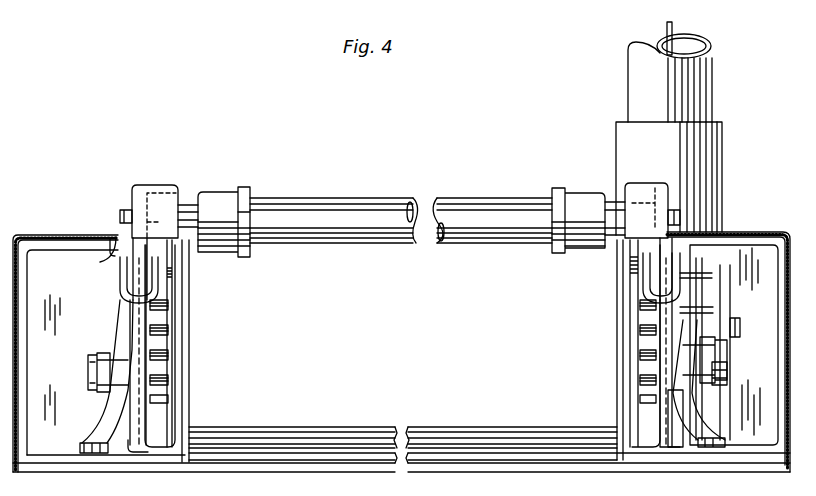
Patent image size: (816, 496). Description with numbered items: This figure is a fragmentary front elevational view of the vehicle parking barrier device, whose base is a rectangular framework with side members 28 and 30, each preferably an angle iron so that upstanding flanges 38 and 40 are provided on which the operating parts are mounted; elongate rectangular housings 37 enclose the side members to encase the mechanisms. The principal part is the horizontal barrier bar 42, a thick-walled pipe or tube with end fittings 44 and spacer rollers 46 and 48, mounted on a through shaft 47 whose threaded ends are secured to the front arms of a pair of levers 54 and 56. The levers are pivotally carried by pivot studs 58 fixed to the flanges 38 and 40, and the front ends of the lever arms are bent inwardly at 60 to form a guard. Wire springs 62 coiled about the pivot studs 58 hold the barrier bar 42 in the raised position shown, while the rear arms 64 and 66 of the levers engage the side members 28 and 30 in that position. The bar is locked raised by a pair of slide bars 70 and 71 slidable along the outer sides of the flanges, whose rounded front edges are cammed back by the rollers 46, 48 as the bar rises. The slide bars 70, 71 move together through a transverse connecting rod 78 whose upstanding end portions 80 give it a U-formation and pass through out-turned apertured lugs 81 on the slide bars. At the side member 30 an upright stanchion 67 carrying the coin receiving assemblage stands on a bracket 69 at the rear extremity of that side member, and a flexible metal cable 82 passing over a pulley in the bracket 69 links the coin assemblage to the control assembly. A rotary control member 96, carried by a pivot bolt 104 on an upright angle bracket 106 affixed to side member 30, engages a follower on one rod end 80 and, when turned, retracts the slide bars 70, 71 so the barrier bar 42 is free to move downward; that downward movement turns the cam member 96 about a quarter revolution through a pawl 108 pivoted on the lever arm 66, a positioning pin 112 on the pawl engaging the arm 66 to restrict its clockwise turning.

The side member 28 is at (62, 458).
The side member 30 is at (755, 456).
The housing 37 is at (62, 237).
The upstanding flange 38 is at (182, 362).
The upstanding flange 40 is at (617, 352).
The horizontal barrier bar 42 is at (331, 198).
The end fitting 44 is at (227, 198).
The spacer roller 46 is at (187, 208).
The through shaft 47 is at (127, 212).
The spacer roller 48 is at (615, 205).
The lever 54 is at (143, 348).
The lever 56 is at (660, 337).
The pivot stud 58 is at (88, 363).
The inwardly bent front end 60 is at (165, 200).
The wire spring 62 is at (128, 314).
The rear arm 64 is at (143, 447).
The rear arm 66 is at (660, 447).
The upright stanchion 67 is at (703, 86).
The bracket 69 is at (716, 160).
The slide bar 70 is at (170, 403).
The slide bar 71 is at (636, 391).
The connecting rod 78 is at (353, 432).
The upstanding end portion 80 is at (101, 258).
The apertured lug 81 is at (118, 278).
The flexible metal cable 82 is at (672, 30).
The rotary control member 96 is at (710, 290).
The pivot bolt 104 is at (740, 327).
The upright angle bracket 106 is at (727, 372).
The pawl 108 is at (676, 445).
The positioning pin 112 is at (690, 274).